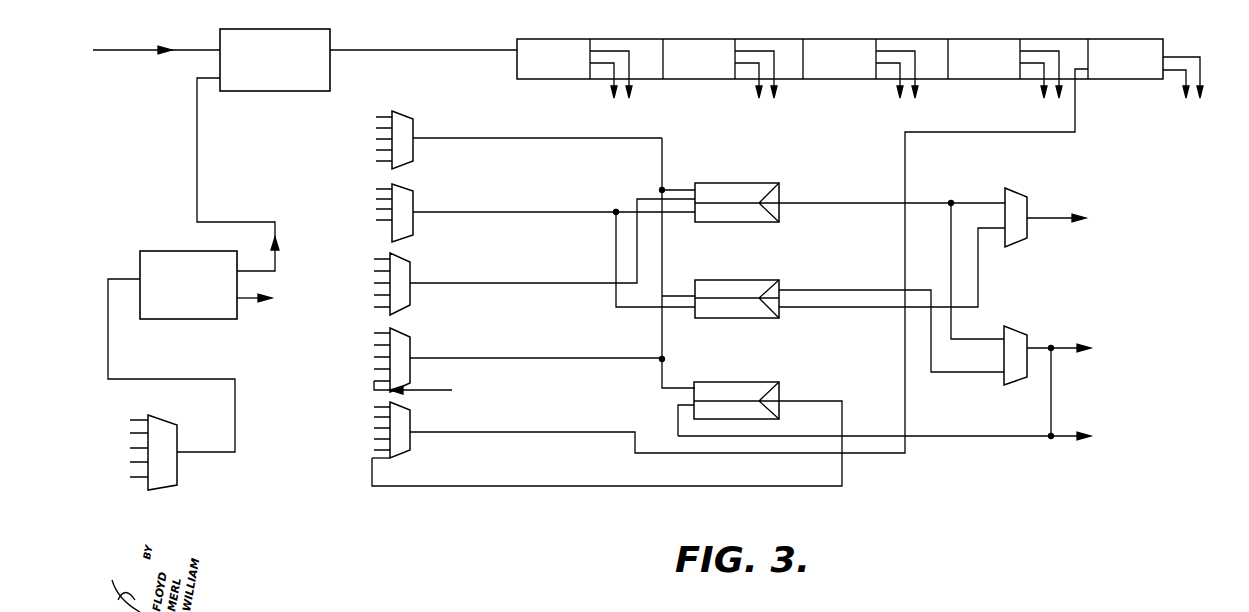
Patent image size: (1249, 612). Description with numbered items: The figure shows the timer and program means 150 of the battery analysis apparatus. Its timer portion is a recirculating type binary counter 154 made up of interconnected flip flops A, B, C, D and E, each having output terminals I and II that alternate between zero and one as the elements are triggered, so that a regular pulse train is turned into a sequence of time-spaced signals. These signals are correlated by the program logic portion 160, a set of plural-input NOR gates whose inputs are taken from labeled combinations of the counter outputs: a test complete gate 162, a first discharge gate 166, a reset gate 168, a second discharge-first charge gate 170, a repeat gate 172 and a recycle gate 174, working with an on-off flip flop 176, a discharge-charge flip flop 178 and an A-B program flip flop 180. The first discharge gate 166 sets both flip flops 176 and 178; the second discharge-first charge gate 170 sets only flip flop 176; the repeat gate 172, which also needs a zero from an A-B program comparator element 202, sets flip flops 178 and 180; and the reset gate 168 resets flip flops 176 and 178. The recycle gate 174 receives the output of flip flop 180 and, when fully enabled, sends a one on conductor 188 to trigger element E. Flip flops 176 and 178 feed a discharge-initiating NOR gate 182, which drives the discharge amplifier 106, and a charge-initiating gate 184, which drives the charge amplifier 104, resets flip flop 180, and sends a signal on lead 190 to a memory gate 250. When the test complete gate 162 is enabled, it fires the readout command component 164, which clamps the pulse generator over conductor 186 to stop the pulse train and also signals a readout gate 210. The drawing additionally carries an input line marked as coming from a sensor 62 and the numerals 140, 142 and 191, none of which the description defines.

The polarity and short out sensor 62 is at (155, 65).
The charge amplifier 104 is at (1108, 351).
The discharge amplifier 106 is at (1113, 216).
The test complete gate 140 is at (164, 465).
The test complete gate 142 is at (148, 450).
The timer and program means 150 is at (332, 514).
The recirculating type binary counter 154 is at (866, 38).
The program logic portion 160 is at (350, 187).
The test complete gate 162 is at (298, 31).
The readout command buffer or clamping circuit 164 is at (178, 238).
The first discharge gate 166 is at (405, 148).
The reset gate 168 is at (405, 224).
The second discharge-first charge gate 170 is at (412, 298).
The repeat gate 172 is at (410, 370).
The recycle gate 174 is at (398, 448).
The on-off flip flop 176 is at (768, 184).
The discharge-charge flip flop 178 is at (765, 290).
The A-B program flip flop 180 is at (768, 393).
The discharge-initiating NOR gate 182 is at (1018, 204).
The charge-initiating gate 184 is at (1022, 338).
The conductor 186 is at (197, 137).
The conductor 188 is at (906, 411).
The lead 190 is at (1064, 440).
The comparator input line 191 is at (482, 402).
The A-B program comparator element 202 is at (520, 400).
The readout gate 210 is at (292, 311).
The memory gate 250 is at (1151, 439).